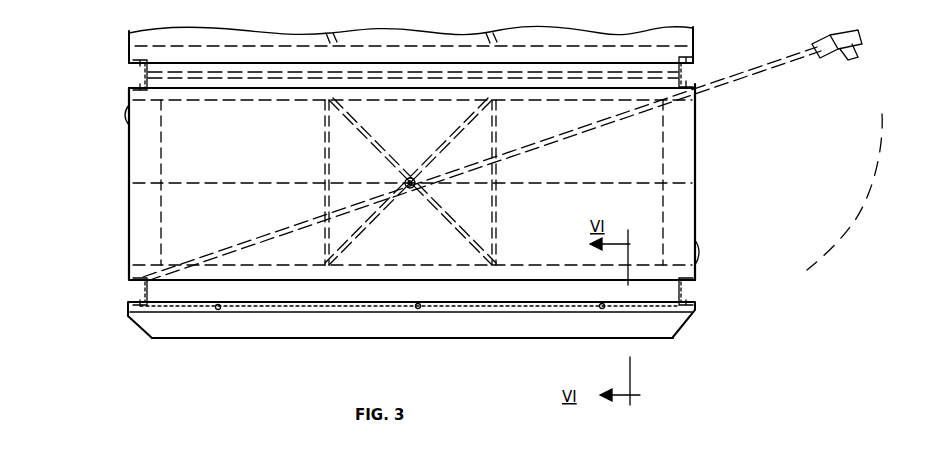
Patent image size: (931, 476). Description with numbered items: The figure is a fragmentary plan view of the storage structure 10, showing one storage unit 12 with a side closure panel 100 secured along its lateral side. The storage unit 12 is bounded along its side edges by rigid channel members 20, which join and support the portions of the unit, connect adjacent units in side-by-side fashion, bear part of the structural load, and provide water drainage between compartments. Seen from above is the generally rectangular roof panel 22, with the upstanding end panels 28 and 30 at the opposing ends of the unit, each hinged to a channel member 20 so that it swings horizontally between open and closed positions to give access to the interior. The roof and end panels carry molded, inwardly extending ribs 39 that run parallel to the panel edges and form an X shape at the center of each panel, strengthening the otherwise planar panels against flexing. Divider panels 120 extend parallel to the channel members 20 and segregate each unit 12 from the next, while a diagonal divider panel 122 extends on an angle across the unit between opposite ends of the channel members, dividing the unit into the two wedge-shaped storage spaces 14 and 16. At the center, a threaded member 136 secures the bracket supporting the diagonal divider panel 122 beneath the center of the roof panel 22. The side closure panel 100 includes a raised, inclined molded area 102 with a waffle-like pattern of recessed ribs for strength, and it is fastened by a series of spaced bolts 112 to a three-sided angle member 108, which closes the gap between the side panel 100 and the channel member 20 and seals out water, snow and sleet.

The storage structure 10 is at (96, 46).
The divider panel 120 is at (418, 68).
The storage unit 12 is at (706, 40).
The channel member 20 is at (696, 68).
The wedge-shaped storage space 14 is at (182, 145).
The molded inwardly extending ribs 39 is at (458, 138).
The roof panel 22 is at (412, 182).
The end panel 28 is at (683, 133).
The wedge-shaped storage space 16 is at (645, 212).
The end panel 30 is at (143, 222).
The diagonal divider panel 122 is at (320, 218).
The threaded member 136 is at (410, 192).
The bolts 112 is at (600, 304).
The side closure panel 100 is at (136, 330).
The raised inclined molded area 102 is at (498, 327).
The three-sided angle member 108 is at (708, 308).